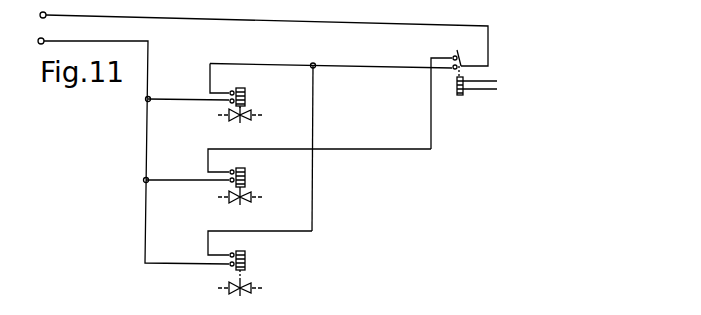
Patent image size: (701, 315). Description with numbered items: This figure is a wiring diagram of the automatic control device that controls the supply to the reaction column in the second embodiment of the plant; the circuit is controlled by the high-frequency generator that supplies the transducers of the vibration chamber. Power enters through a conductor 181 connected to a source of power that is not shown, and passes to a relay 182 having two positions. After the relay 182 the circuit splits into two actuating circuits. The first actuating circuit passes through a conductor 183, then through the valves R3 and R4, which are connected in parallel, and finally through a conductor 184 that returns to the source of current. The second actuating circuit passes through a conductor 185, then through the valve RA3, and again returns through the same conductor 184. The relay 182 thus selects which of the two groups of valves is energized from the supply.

The conductor 181 is at (88, 18).
The relay 182 is at (457, 95).
The conductor 183 is at (355, 64).
The conductor 184 is at (148, 137).
The conductor 185 is at (353, 151).
The valve R3 is at (246, 101).
The valve RA3 is at (246, 181).
The valve R4 is at (246, 265).